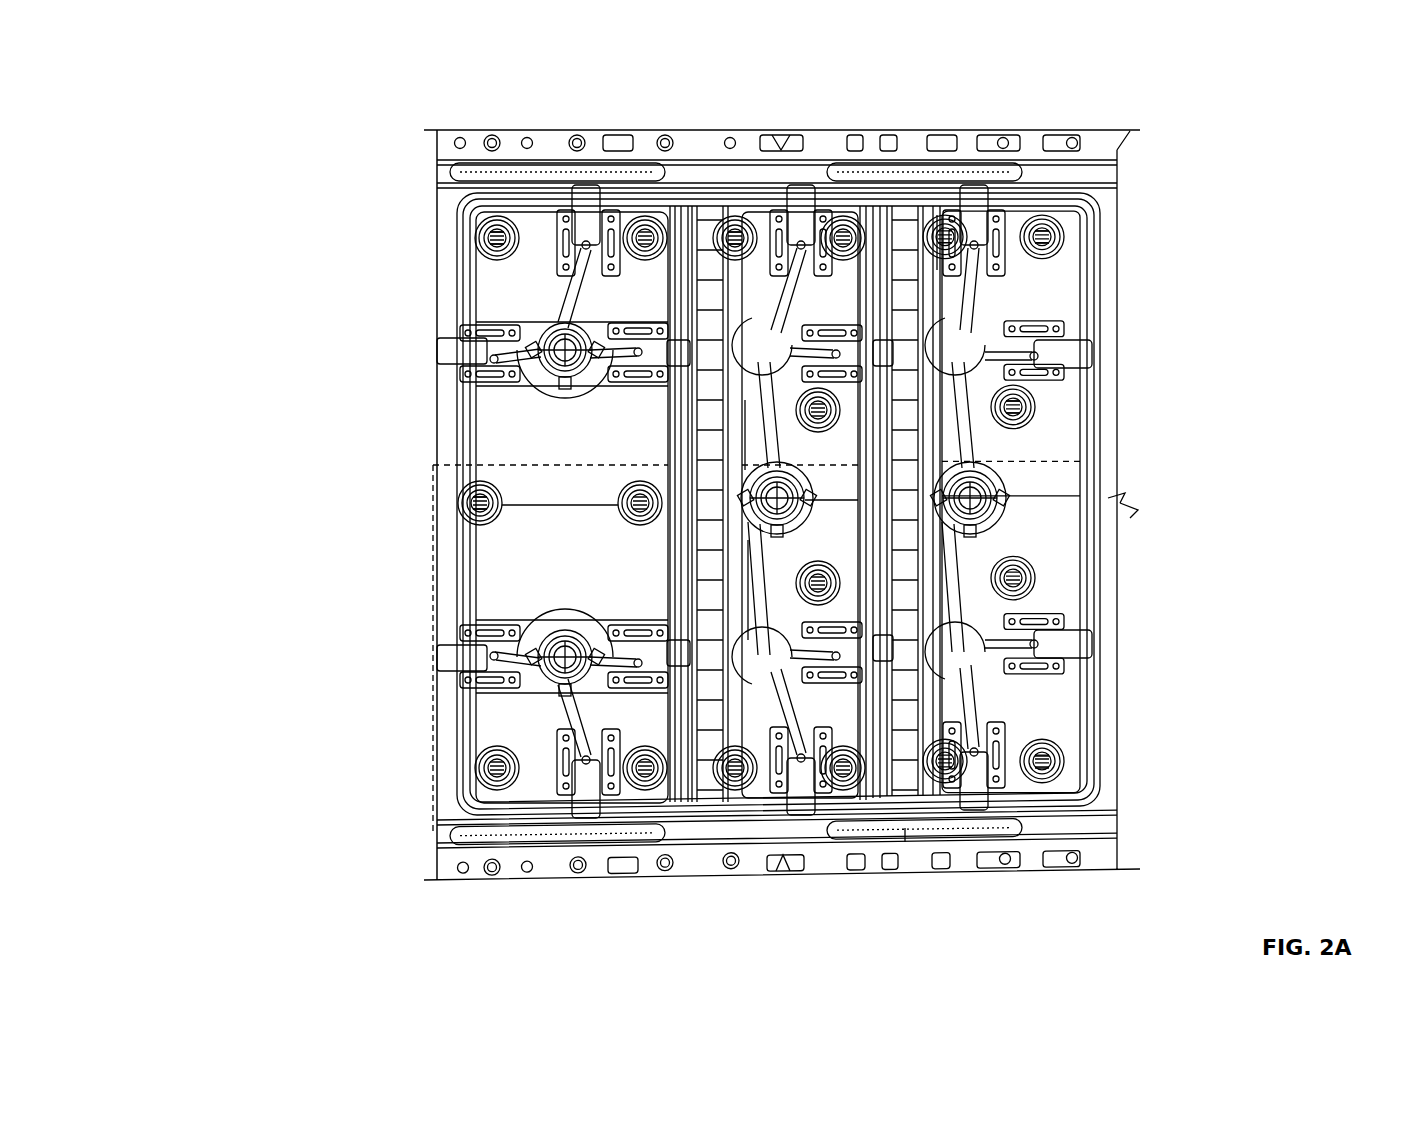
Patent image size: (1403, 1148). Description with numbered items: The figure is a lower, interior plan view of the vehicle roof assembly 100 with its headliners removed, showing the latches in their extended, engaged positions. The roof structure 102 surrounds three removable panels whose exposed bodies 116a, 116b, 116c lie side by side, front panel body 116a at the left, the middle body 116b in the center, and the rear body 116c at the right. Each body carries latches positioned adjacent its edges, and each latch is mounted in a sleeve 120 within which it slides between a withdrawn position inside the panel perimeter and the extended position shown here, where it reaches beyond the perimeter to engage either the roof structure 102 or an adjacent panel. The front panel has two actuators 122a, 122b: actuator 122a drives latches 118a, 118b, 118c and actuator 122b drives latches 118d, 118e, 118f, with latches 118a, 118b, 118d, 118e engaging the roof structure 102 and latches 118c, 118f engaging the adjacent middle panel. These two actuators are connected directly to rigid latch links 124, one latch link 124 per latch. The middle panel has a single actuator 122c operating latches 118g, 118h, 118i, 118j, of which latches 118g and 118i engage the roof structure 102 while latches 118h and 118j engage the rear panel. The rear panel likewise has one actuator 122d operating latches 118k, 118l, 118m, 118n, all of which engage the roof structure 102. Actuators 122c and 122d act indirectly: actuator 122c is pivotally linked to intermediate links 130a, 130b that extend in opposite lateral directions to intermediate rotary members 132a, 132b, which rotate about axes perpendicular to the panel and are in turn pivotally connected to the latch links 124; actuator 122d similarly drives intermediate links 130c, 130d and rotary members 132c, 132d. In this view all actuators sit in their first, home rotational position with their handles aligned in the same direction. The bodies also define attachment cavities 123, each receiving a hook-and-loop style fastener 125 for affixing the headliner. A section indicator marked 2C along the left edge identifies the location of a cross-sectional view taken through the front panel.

The vehicle roof assembly 100 is at (288, 100).
The vehicle roof structure 102 is at (475, 872).
The body of first panel 116a is at (470, 457).
The body of second panel 116b is at (740, 735).
The body of third panel 116c is at (1050, 583).
The latch 118a is at (458, 347).
The latch 118b is at (585, 188).
The latch 118c is at (670, 343).
The latch 118d is at (458, 663).
The latch 118e is at (585, 800).
The latch 118f is at (662, 795).
The latch 118g is at (781, 150).
The latch 118h is at (855, 343).
The latch 118i is at (775, 900).
The latch 118j is at (866, 790).
The latch 118k is at (974, 188).
The latch 118l is at (1080, 356).
The latch 118m is at (975, 797).
The latch 118n is at (1080, 647).
The sleeve 120 is at (520, 380).
The actuator 122a is at (548, 325).
The actuator 122b is at (538, 672).
The actuator 122c is at (763, 503).
The actuator 122d is at (992, 497).
The attachment cavity 123 is at (500, 216).
The latch link 124 is at (1140, 695).
The hook-and-loop style fastener 125 is at (496, 233).
The intermediate link 130a is at (762, 400).
The intermediate link 130b is at (755, 610).
The intermediate link 130c is at (968, 440).
The intermediate link 130d is at (952, 572).
The intermediate rotary member 132a is at (795, 450).
The intermediate rotary member 132b is at (765, 630).
The intermediate rotary member 132c is at (936, 228).
The intermediate rotary member 132d is at (898, 864).
The section line 2C is at (430, 782).